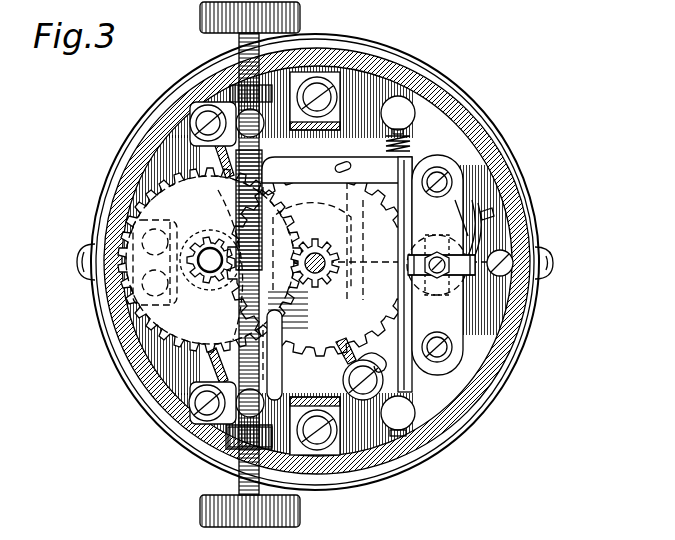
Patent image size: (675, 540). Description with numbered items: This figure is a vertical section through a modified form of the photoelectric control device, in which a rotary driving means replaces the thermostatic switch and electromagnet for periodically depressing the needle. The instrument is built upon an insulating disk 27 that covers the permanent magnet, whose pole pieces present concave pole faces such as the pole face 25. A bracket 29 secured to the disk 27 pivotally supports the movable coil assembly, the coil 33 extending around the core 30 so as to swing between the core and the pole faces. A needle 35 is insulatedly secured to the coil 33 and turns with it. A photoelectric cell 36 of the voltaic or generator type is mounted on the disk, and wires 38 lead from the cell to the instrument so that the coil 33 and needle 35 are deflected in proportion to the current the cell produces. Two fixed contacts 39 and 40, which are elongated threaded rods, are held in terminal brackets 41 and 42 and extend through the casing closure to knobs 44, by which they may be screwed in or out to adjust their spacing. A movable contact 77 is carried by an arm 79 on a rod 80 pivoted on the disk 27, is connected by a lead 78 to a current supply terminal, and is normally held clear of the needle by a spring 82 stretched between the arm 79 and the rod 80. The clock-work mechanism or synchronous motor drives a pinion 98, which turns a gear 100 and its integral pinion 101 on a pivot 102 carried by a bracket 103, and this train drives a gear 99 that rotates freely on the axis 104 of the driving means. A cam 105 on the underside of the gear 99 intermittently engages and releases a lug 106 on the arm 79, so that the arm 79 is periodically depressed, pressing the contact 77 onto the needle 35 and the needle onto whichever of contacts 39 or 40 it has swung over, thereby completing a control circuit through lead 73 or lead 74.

The pole face 25 is at (472, 204).
The disk 27 is at (425, 107).
The bracket 29 is at (440, 165).
The core 30 is at (470, 282).
The coil 33 is at (445, 222).
The needle 35 is at (320, 270).
The photoelectric cell 36 is at (449, 532).
The wires 38 is at (492, 213).
The contact 39 is at (262, 162).
The contact 40 is at (228, 432).
The terminal bracket 41 is at (238, 87).
The terminal bracket 42 is at (236, 448).
The knob 44 is at (208, 510).
The lead 73 is at (218, 160).
The lead 74 is at (208, 372).
The movable contact 77 is at (282, 372).
The lead 78 is at (375, 353).
The arm 79 is at (337, 170).
The rod 80 is at (412, 382).
The spring 82 is at (413, 140).
The pinion 98 is at (333, 258).
The gear 99 is at (350, 380).
The gear 100 is at (155, 318).
The pinion 101 is at (212, 237).
The pivot 102 is at (232, 290).
The bracket 103 is at (135, 262).
The axis 104 is at (308, 300).
The cam 105 is at (343, 165).
The lug 106 is at (320, 183).